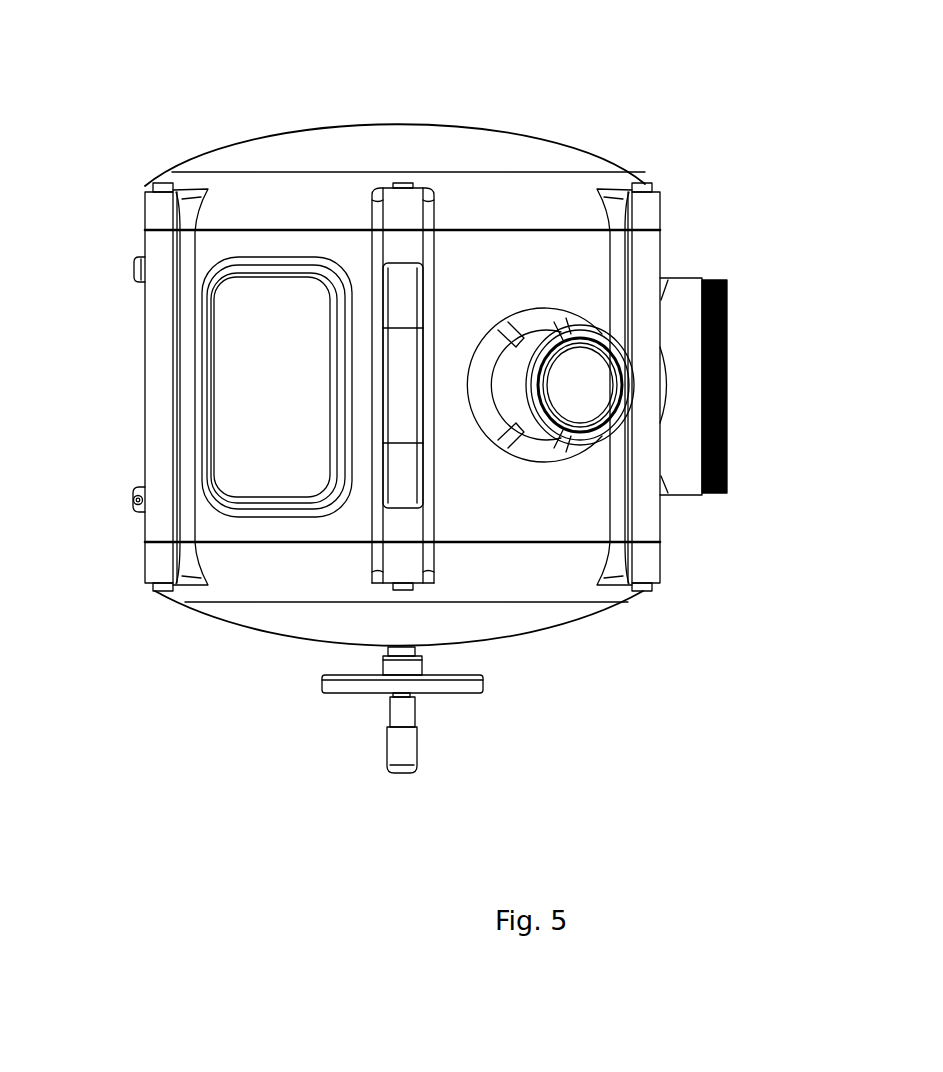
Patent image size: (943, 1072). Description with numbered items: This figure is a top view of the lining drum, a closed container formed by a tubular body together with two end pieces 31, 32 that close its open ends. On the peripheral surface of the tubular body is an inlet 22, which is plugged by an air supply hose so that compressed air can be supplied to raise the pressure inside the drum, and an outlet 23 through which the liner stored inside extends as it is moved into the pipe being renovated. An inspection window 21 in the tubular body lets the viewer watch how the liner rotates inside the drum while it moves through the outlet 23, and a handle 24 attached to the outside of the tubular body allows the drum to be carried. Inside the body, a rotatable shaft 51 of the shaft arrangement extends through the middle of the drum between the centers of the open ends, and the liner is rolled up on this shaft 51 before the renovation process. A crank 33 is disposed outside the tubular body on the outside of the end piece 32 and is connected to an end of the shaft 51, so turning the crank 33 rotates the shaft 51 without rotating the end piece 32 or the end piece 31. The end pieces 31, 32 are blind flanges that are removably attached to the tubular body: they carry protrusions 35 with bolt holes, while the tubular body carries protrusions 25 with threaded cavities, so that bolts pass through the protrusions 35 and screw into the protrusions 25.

The inspection window 21 is at (240, 483).
The inlet 22 is at (557, 350).
The outlet 23 is at (720, 278).
The handle 24 is at (397, 283).
The protrusions 25 is at (401, 294).
The end piece 31 is at (315, 133).
The end piece 32 is at (525, 632).
The crank 33 is at (393, 758).
The protrusions 35 is at (398, 198).
The rotatable shaft 51 is at (422, 650).